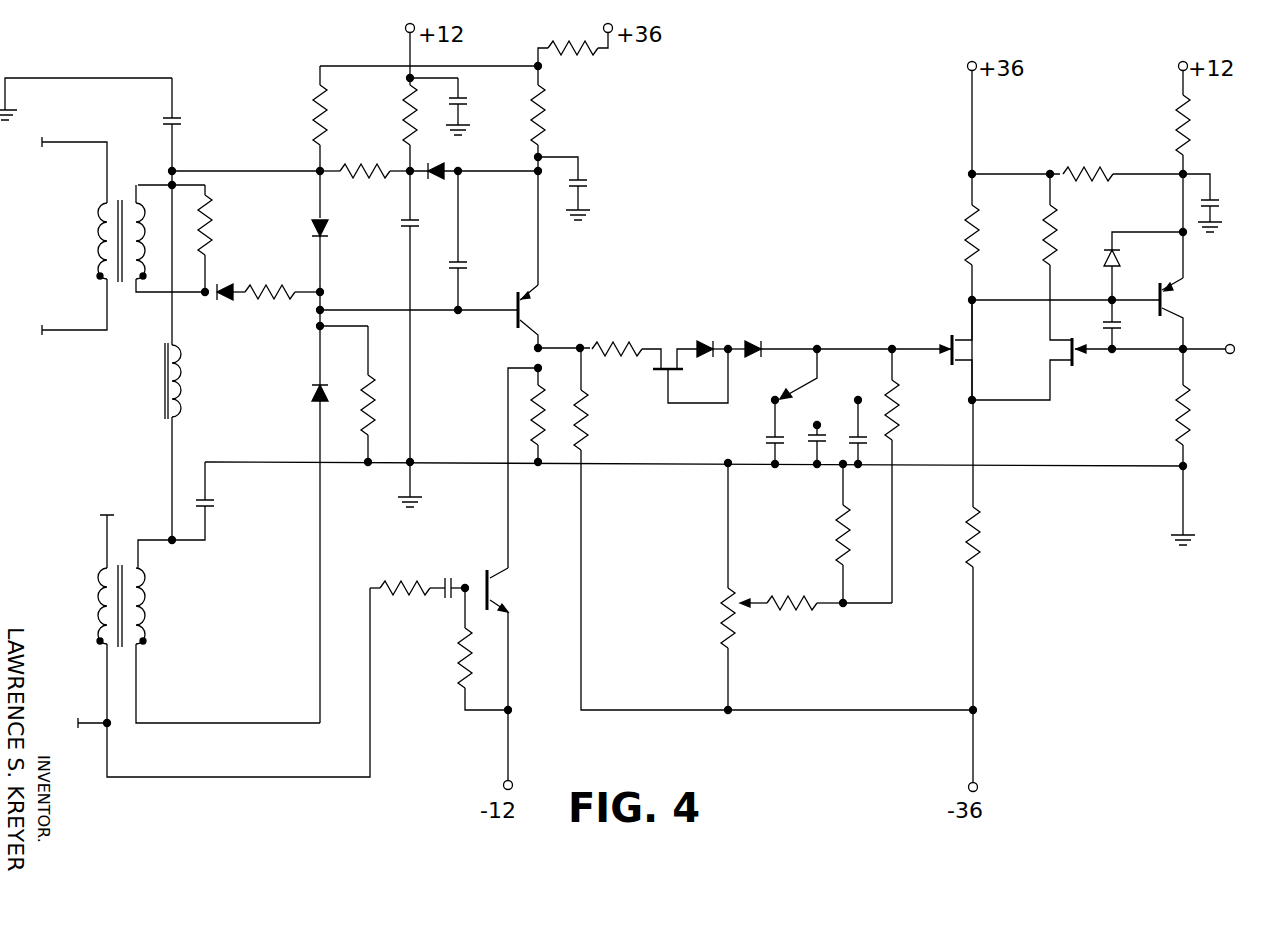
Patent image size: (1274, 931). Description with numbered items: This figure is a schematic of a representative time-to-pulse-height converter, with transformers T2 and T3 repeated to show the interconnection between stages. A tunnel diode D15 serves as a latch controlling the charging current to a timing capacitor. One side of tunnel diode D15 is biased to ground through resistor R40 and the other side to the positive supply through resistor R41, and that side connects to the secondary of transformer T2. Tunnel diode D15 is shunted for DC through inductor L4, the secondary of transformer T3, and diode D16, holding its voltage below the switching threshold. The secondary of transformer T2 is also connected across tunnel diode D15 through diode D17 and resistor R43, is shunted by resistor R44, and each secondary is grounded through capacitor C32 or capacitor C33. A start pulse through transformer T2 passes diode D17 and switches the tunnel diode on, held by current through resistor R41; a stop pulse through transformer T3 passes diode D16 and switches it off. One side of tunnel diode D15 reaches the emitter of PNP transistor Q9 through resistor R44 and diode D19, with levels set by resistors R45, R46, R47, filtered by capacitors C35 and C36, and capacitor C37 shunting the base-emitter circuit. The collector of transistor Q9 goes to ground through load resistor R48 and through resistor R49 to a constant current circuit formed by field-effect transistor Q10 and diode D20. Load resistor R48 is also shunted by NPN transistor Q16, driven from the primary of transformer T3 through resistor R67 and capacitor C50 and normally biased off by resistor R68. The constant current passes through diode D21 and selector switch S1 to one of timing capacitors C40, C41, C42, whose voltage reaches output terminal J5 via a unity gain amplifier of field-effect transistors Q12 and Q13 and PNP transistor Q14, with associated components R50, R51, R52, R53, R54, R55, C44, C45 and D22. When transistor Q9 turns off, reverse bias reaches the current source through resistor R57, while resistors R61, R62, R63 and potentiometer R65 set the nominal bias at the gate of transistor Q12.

The capacitor C32 is at (192, 136).
The transformer T2 is at (116, 200).
The resistor R44 is at (215, 222).
The diode D17 is at (228, 301).
The resistor R43 is at (256, 292).
The inductor L4 is at (165, 398).
The capacitor C33 is at (220, 523).
The transformer T3 is at (108, 622).
The resistor R41 is at (316, 138).
The tunnel diode D15 is at (313, 240).
The resistor R45 is at (405, 136).
The capacitor C35 is at (478, 115).
The diode D19 is at (438, 165).
The resistor R46 is at (562, 56).
The resistor R47 is at (542, 96).
The capacitor C36 is at (592, 198).
The capacitor C37 is at (476, 280).
The PNP transistor Q9 is at (526, 316).
The resistor R40 is at (368, 400).
The diode D16 is at (318, 402).
The load resistor R48 is at (538, 392).
The resistor R57 is at (586, 445).
The resistor R49 is at (626, 343).
The field-effect transistor Q10 is at (660, 372).
The diode D20 is at (720, 330).
The diode D21 is at (765, 353).
The selector switch S1 is at (797, 395).
The timing capacitor C40 is at (770, 440).
The timing capacitor C41 is at (813, 443).
The timing capacitor C42 is at (865, 440).
The resistor R61 is at (895, 420).
The resistor R62 is at (843, 548).
The resistor R63 is at (792, 607).
The potentiometer R65 is at (728, 635).
The resistor R55 is at (977, 565).
The NPN transistor Q16 is at (494, 578).
The capacitor C50 is at (456, 578).
The resistor R67 is at (395, 594).
The resistor R68 is at (466, 660).
The resistor R50 is at (970, 258).
The resistor R52 is at (1063, 178).
The resistor R51 is at (1053, 265).
The resistor R53 is at (1180, 136).
The capacitor C45 is at (1222, 218).
The zener diode D22 is at (1130, 278).
The PNP transistor Q14 is at (1178, 308).
The field-effect transistor Q12 is at (967, 340).
The field-effect transistor Q13 is at (1078, 360).
The capacitor C44 is at (1121, 322).
The output terminal J5 is at (1229, 354).
The resistor R54 is at (1185, 440).